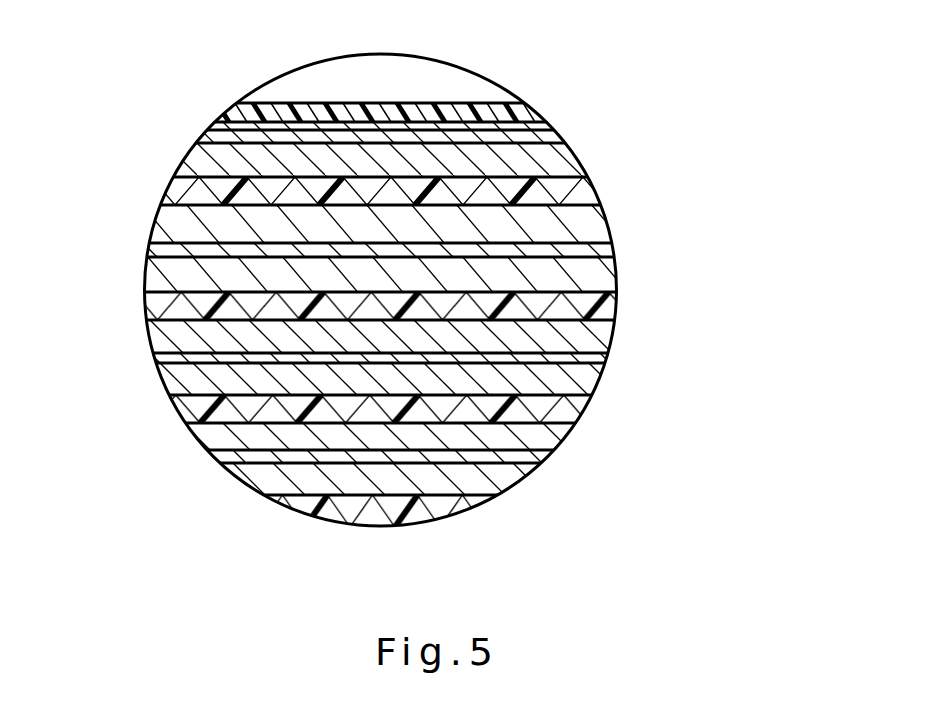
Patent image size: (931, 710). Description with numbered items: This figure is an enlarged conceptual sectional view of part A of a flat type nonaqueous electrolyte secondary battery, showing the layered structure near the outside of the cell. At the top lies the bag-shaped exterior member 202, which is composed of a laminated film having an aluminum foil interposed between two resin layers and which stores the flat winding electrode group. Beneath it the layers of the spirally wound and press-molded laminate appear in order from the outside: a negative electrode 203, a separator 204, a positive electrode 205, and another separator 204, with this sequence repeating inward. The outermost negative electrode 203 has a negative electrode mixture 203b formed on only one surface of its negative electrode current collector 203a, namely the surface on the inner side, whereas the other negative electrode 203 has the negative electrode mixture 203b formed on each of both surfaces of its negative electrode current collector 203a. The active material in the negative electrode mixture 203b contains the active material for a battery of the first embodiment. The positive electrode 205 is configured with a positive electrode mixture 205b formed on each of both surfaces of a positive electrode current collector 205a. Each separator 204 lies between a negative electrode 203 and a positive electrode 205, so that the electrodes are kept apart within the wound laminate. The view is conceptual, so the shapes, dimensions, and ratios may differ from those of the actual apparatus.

The part A is at (268, 92).
The bag-shaped exterior member 202 is at (533, 110).
The negative electrode 203 is at (481, 263).
The negative electrode current collector 203a is at (556, 132).
The negative electrode mixture 203b is at (568, 158).
The separator 204 is at (168, 192).
The positive electrode 205 is at (481, 374).
The positive electrode current collector 205a is at (585, 253).
The positive electrode mixture 205b is at (583, 215).